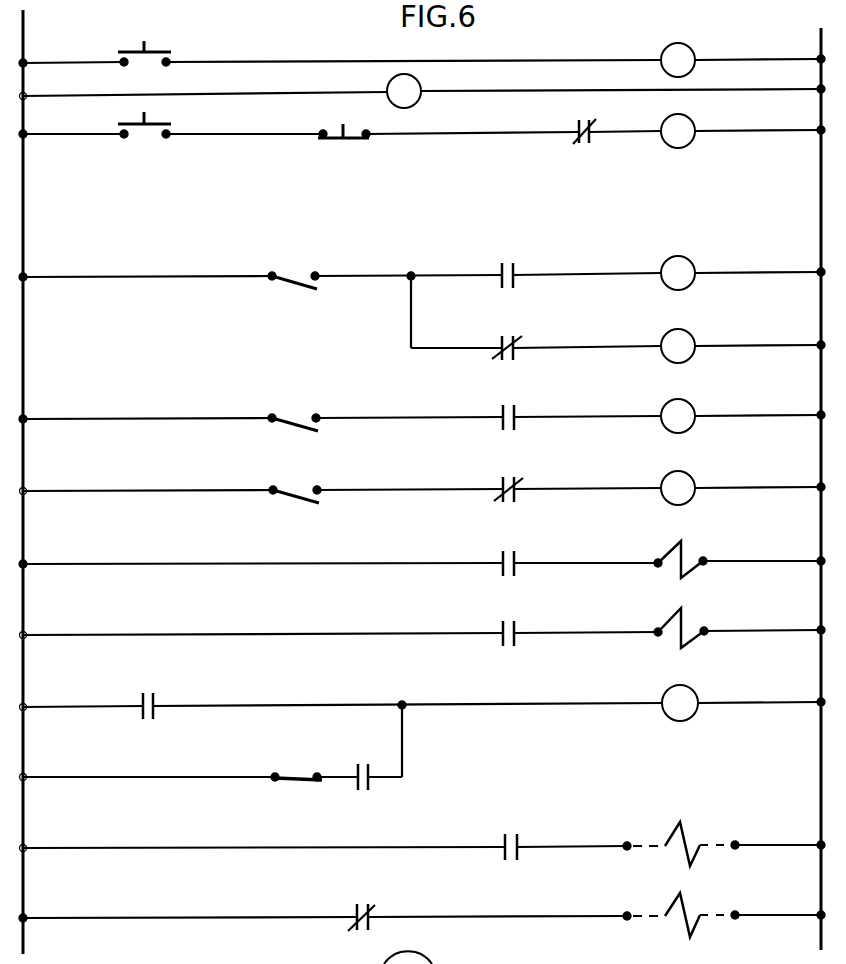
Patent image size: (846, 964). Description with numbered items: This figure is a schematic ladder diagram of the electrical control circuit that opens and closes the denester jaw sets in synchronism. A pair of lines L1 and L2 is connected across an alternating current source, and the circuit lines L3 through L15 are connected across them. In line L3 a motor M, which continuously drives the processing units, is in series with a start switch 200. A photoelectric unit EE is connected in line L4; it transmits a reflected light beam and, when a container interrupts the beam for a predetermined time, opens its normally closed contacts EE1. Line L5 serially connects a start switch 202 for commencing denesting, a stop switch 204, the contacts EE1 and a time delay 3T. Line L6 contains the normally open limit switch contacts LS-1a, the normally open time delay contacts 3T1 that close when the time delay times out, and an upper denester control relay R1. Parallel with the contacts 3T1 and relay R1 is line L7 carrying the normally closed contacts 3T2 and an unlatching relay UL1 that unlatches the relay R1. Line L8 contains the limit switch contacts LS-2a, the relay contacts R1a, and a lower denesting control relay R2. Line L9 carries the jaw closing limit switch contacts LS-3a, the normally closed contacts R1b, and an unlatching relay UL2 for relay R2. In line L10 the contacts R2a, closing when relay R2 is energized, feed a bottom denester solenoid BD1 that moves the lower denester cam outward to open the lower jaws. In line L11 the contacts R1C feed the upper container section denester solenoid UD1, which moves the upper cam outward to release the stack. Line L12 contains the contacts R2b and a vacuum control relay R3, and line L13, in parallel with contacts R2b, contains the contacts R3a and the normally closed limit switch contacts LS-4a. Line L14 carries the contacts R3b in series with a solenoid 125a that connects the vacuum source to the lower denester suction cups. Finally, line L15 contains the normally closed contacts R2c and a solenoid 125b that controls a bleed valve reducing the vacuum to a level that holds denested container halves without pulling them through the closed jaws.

The power line L1 is at (23, 19).
The power line L2 is at (821, 44).
The circuit line L3 is at (60, 64).
The circuit line L4 is at (60, 97).
The circuit line L5 is at (60, 135).
The circuit line L6 is at (66, 278).
The sub-circuit line L7 is at (458, 349).
The circuit line L8 is at (66, 420).
The circuit line L9 is at (66, 492).
The circuit line L10 is at (92, 565).
The circuit line L11 is at (88, 636).
The circuit line L12 is at (84, 708).
The sub-circuit line L13 is at (92, 778).
The circuit line L14 is at (88, 849).
The circuit line L15 is at (88, 919).
The start switch 200 is at (159, 51).
The start switch 202 is at (160, 123).
The stop switch 204 is at (332, 133).
The motor M is at (684, 50).
The photoelectric unit EE is at (418, 85).
The normally closed contacts of photoelectric unit EE1 is at (590, 123).
The time delay 3T is at (694, 126).
The normally open limit switch contacts LS-1a is at (288, 273).
The normally open time delay contacts 3T1 is at (511, 263).
The upper denester control relay R1 is at (696, 266).
The normally closed relay contacts 3T2 is at (514, 344).
The unlatching relay UL1 is at (696, 340).
The normally open limit switch contacts LS-2a is at (296, 417).
The normally open relay contacts R1a is at (514, 405).
The lower denesting control relay R2 is at (696, 411).
The normally open jaw closing limit switch contacts LS-3a is at (298, 491).
The normally closed relay contacts R1b is at (514, 478).
The unlatching relay UL2 is at (696, 478).
The normally open relay contacts R2a is at (514, 549).
The bottom denester solenoid BD1 is at (696, 554).
The normally open relay contacts R1C is at (516, 621).
The upper container section denester solenoid UD1 is at (696, 626).
The normally open relay contacts R2b is at (151, 693).
The vacuum control relay R3 is at (698, 696).
The normally closed limit switch contacts LS-4a is at (298, 774).
The normally open relay contacts R3a is at (366, 792).
The normally open relay contacts R3b is at (516, 833).
The solenoid 125a is at (692, 846).
The normally closed relay contacts R2c is at (362, 904).
The solenoid 125b is at (692, 916).